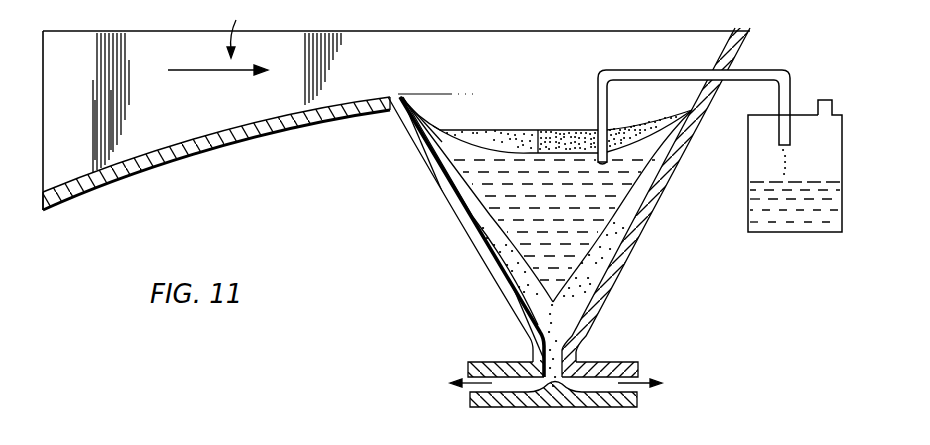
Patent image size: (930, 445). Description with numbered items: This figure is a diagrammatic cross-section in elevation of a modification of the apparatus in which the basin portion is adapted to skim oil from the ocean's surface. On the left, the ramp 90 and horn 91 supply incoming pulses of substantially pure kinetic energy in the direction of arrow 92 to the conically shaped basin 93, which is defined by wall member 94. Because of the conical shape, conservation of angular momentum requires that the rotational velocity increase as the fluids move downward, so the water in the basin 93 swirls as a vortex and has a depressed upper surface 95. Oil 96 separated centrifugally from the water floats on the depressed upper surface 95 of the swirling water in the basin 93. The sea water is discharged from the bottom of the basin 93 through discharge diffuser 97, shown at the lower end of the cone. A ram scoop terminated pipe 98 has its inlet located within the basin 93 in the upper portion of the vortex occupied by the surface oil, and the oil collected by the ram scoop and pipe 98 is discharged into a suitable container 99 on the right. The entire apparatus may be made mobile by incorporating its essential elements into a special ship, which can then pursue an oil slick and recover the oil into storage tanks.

The ramp 90 is at (244, 136).
The horn 91 is at (247, 29).
The arrow 92 is at (188, 70).
The conically shaped basin 93 is at (477, 213).
The wall member 94 is at (490, 261).
The depressed upper surface 95 is at (496, 129).
The oil 96 is at (541, 130).
The discharge diffuser 97 is at (603, 385).
The ram scoop terminated pipe 98 is at (597, 92).
The container 99 is at (835, 160).